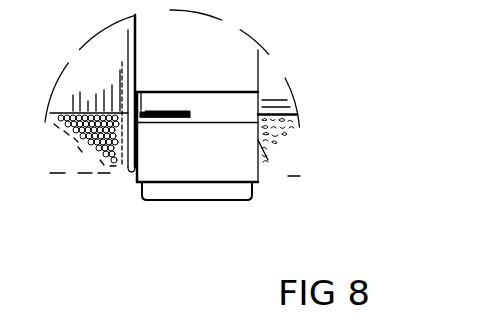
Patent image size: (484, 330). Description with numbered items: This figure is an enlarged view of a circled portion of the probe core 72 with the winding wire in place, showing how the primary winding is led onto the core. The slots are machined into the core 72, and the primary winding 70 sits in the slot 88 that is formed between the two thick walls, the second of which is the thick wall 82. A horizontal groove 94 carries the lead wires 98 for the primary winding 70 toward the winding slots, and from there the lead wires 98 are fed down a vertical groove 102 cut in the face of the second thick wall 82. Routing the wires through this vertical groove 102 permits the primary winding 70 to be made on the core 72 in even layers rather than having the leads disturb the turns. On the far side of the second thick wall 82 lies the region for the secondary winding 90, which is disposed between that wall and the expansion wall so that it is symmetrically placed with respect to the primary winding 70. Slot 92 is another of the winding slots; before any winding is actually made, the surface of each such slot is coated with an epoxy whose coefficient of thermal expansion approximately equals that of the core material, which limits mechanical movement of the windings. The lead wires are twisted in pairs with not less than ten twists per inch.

The primary winding 70 is at (80, 159).
The core 72 is at (270, 42).
The second thick wall 82 is at (222, 173).
The slot 88 is at (70, 82).
The secondary winding 90 is at (289, 167).
The slot 92 is at (280, 90).
The horizontal groove 94 is at (232, 113).
The lead wires 98 is at (176, 110).
The vertical groove 102 is at (141, 100).